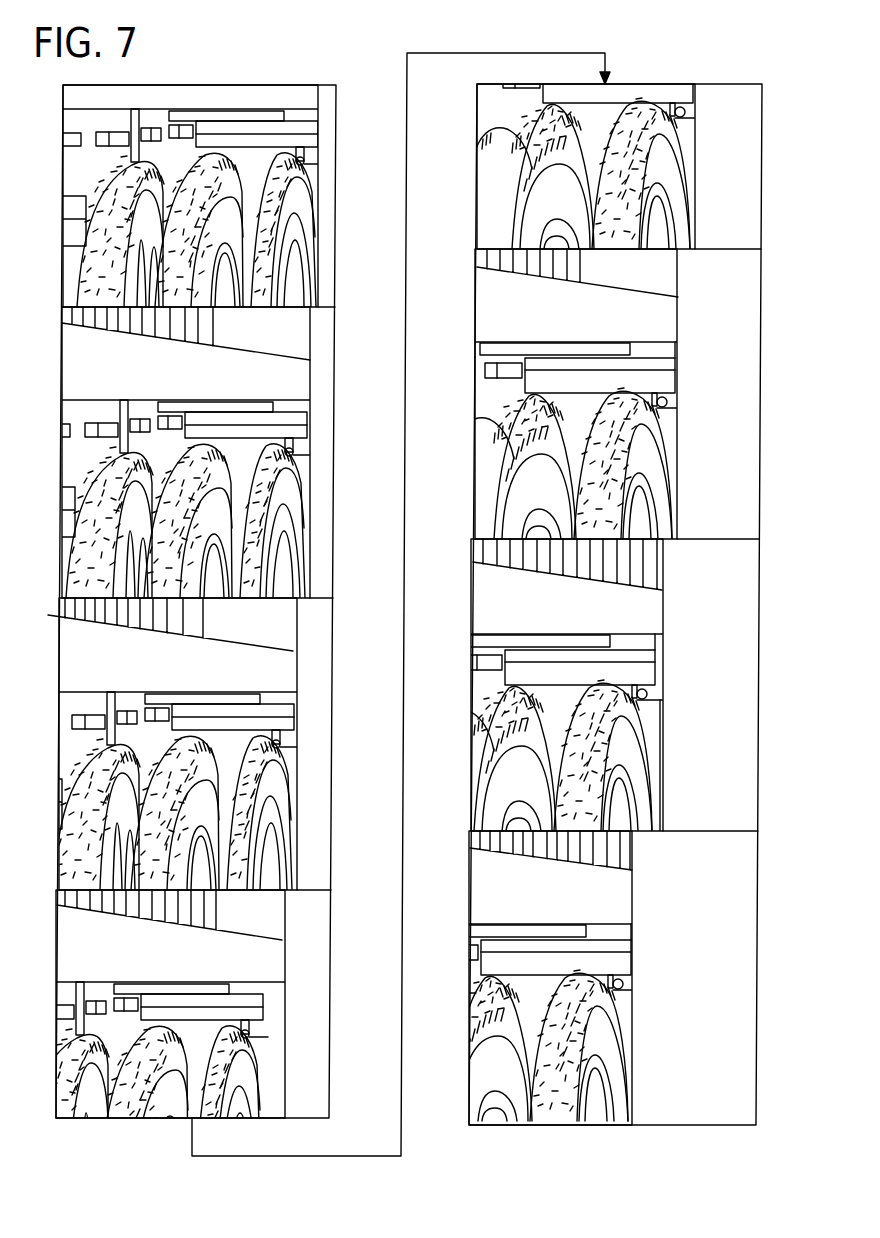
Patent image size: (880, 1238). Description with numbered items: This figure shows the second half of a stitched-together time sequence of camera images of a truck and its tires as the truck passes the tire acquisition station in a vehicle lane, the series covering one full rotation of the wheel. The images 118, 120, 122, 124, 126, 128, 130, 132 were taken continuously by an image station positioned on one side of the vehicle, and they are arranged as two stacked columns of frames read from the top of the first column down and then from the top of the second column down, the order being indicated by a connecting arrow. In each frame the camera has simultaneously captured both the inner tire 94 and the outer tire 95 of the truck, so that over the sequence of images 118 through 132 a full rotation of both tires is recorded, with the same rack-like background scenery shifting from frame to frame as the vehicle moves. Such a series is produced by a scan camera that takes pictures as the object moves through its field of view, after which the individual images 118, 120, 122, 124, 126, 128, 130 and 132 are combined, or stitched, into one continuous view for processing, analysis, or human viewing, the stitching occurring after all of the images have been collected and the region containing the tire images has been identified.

The inner tire 94 is at (82, 508).
The outer tire 95 is at (187, 457).
The image 118 is at (336, 201).
The image 120 is at (203, 452).
The image 122 is at (328, 838).
The image 124 is at (328, 1042).
The image 126 is at (767, 192).
The image 128 is at (763, 395).
The image 130 is at (762, 682).
The image 132 is at (758, 990).